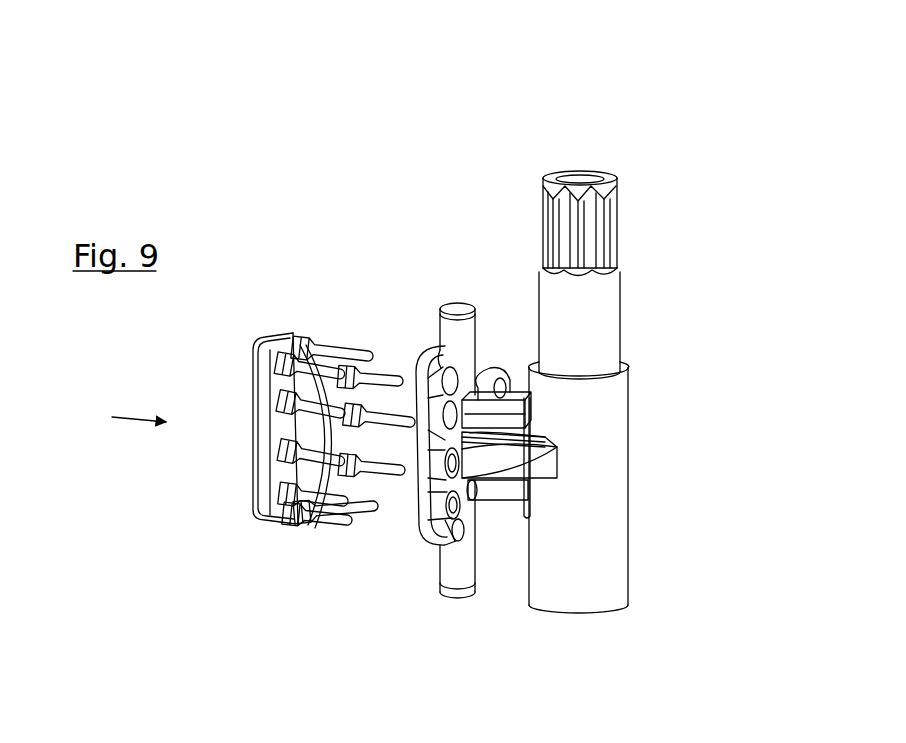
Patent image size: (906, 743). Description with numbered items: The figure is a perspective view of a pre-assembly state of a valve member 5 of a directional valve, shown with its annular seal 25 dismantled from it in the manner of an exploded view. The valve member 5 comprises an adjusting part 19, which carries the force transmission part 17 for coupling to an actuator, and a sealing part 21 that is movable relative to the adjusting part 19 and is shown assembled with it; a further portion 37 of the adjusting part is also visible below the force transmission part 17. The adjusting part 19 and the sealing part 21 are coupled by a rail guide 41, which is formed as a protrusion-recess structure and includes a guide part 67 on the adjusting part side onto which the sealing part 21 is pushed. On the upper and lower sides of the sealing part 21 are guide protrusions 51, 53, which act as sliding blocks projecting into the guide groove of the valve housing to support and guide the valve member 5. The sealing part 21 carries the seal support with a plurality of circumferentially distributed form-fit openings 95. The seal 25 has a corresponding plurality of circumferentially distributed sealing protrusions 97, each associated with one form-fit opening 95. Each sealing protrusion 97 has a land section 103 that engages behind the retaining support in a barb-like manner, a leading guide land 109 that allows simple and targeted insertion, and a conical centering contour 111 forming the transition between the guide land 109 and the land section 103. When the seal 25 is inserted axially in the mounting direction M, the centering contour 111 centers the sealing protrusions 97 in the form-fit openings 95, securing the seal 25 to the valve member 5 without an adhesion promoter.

The valve member 5 is at (664, 103).
The force transmission part 17 is at (619, 233).
The cylindrical body 37 is at (621, 318).
The adjusting part 19 is at (631, 540).
The rail guide 41 is at (490, 302).
The guide protrusion 51 is at (455, 312).
The guide protrusion 53 is at (455, 600).
The sealing part 21 is at (400, 594).
The guide part 67 is at (510, 410).
The form-fit opening 95 is at (549, 482).
The seal 25 is at (275, 318).
The sealing protrusion 97 is at (403, 402).
The land section 103 is at (262, 500).
The conical centering contour 111 is at (305, 526).
The guide land 109 is at (372, 513).
The mounting direction M is at (130, 420).